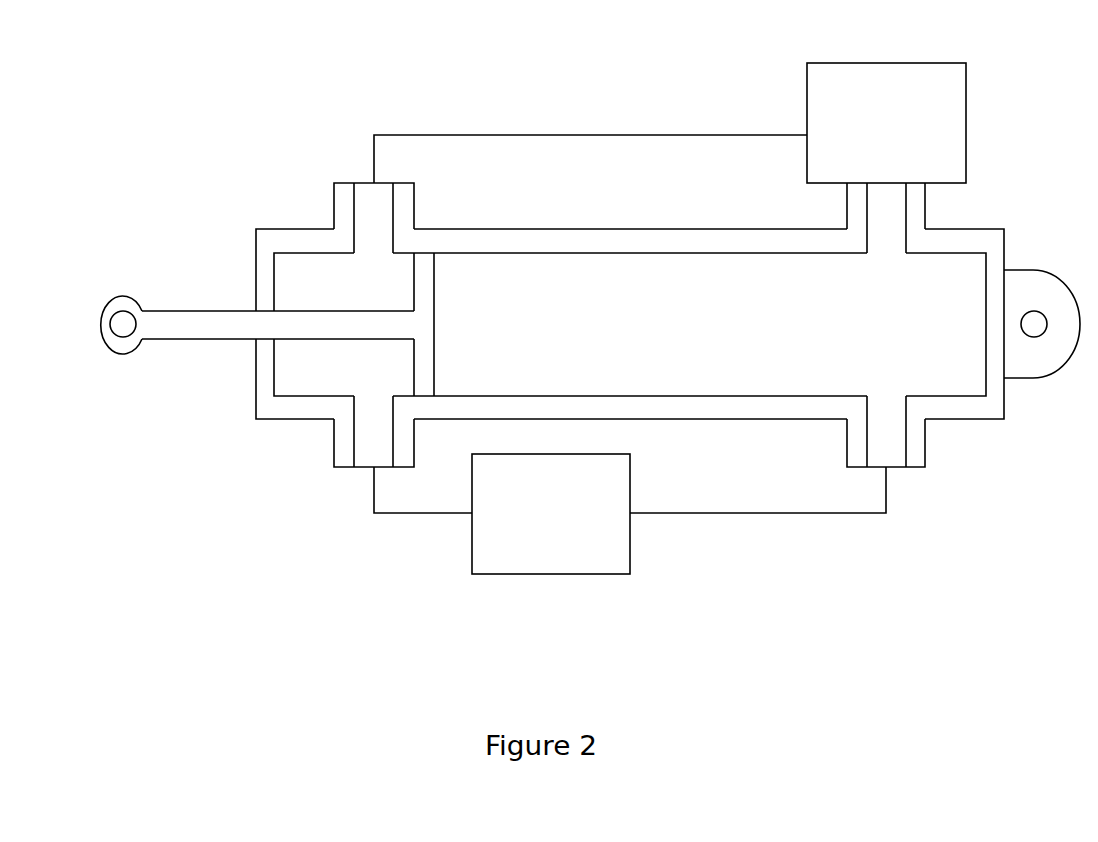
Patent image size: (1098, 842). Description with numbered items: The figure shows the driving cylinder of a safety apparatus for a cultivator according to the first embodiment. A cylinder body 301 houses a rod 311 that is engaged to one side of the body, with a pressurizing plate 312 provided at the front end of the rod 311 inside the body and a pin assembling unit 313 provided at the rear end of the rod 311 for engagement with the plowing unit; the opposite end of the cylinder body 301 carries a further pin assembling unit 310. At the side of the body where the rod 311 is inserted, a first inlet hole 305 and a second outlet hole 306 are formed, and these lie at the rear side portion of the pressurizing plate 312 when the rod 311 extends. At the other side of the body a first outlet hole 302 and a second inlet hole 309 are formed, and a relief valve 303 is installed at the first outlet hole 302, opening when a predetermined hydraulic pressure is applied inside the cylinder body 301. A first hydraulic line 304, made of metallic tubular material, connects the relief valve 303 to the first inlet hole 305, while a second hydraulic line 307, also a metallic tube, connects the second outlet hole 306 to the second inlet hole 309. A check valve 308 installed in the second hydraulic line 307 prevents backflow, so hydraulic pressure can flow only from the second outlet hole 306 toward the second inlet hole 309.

The cylinder body 301 is at (631, 229).
The first outlet hole 302 is at (887, 211).
The relief valve 303 is at (886, 63).
The first hydraulic line 304 is at (731, 135).
The first inlet hole 305 is at (373, 207).
The second outlet hole 306 is at (373, 451).
The second hydraulic line 307 is at (425, 518).
The check valve 308 is at (552, 578).
The second inlet hole 309 is at (887, 453).
The pin assembling unit 310 is at (1036, 270).
The rod 311 is at (197, 311).
The pressurizing plate 312 is at (425, 372).
The pin assembling unit 313 is at (122, 322).